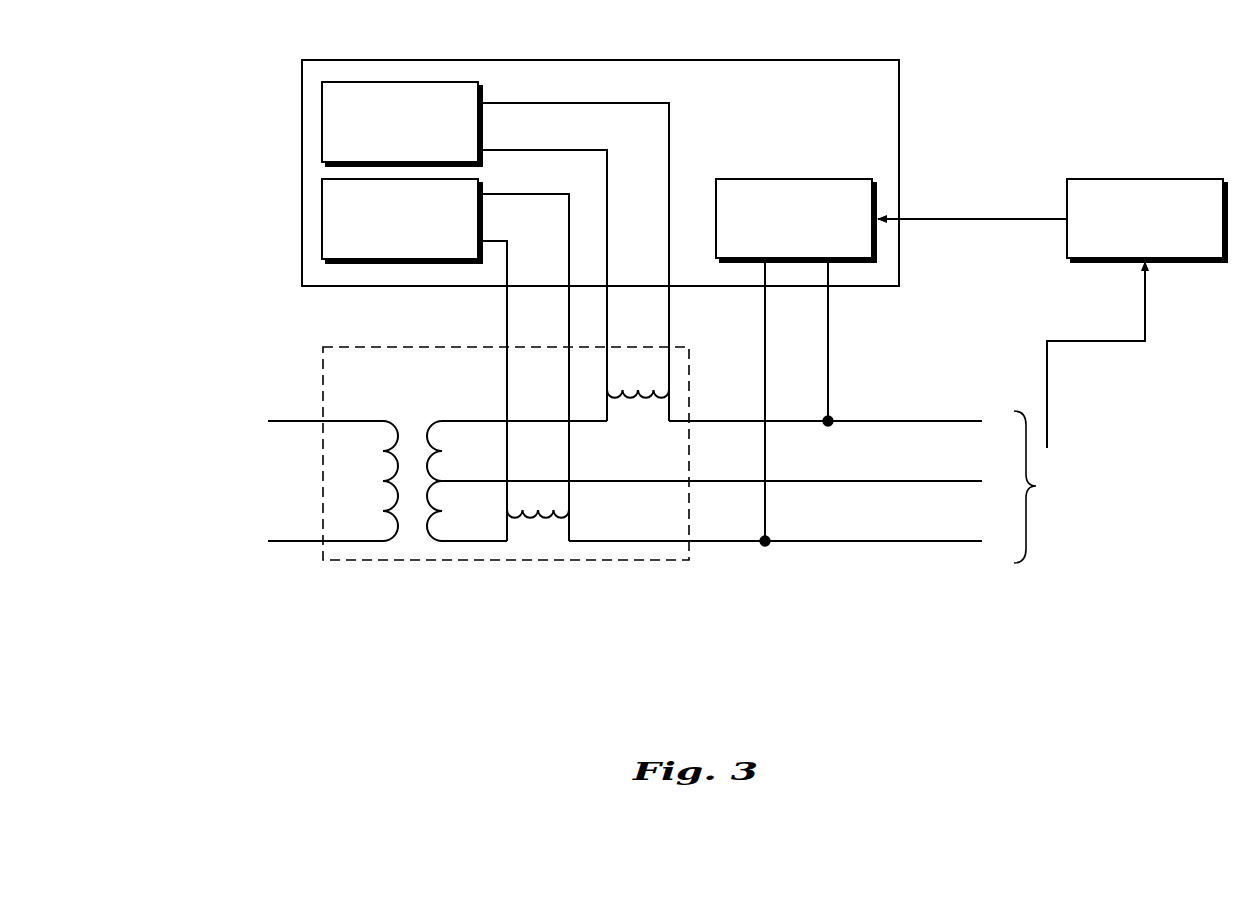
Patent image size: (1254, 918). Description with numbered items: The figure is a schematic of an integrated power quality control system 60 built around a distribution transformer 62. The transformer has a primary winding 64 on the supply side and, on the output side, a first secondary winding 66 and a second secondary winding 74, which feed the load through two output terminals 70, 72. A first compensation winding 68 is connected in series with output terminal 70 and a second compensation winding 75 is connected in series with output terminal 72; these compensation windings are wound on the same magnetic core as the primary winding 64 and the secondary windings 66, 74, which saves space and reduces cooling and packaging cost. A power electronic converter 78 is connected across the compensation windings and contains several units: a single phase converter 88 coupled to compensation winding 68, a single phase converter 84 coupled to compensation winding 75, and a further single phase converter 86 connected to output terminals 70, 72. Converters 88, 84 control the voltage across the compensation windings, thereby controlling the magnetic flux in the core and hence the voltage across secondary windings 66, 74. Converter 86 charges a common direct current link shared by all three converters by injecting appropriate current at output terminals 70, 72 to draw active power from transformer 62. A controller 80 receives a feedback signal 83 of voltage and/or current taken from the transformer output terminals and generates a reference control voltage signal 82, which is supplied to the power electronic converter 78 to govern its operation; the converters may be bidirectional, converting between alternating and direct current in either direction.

The integrated power quality control system 60 is at (181, 94).
The distribution transformer 62 is at (625, 482).
The primary winding 64 is at (383, 434).
The first secondary winding 66 is at (425, 543).
The first compensation winding 68 is at (642, 398).
The output terminal 70 is at (882, 421).
The output terminal 72 is at (882, 542).
The second secondary winding 74 is at (445, 433).
The second compensation winding 75 is at (556, 519).
The power electronic converter 78 is at (899, 60).
The controller 80 is at (1203, 179).
The reference control voltage signal 82 is at (983, 218).
The feedback signal 83 is at (1047, 395).
The single phase converter 84 is at (322, 220).
The single phase converter 86 is at (775, 179).
The single phase converter 88 is at (322, 123).